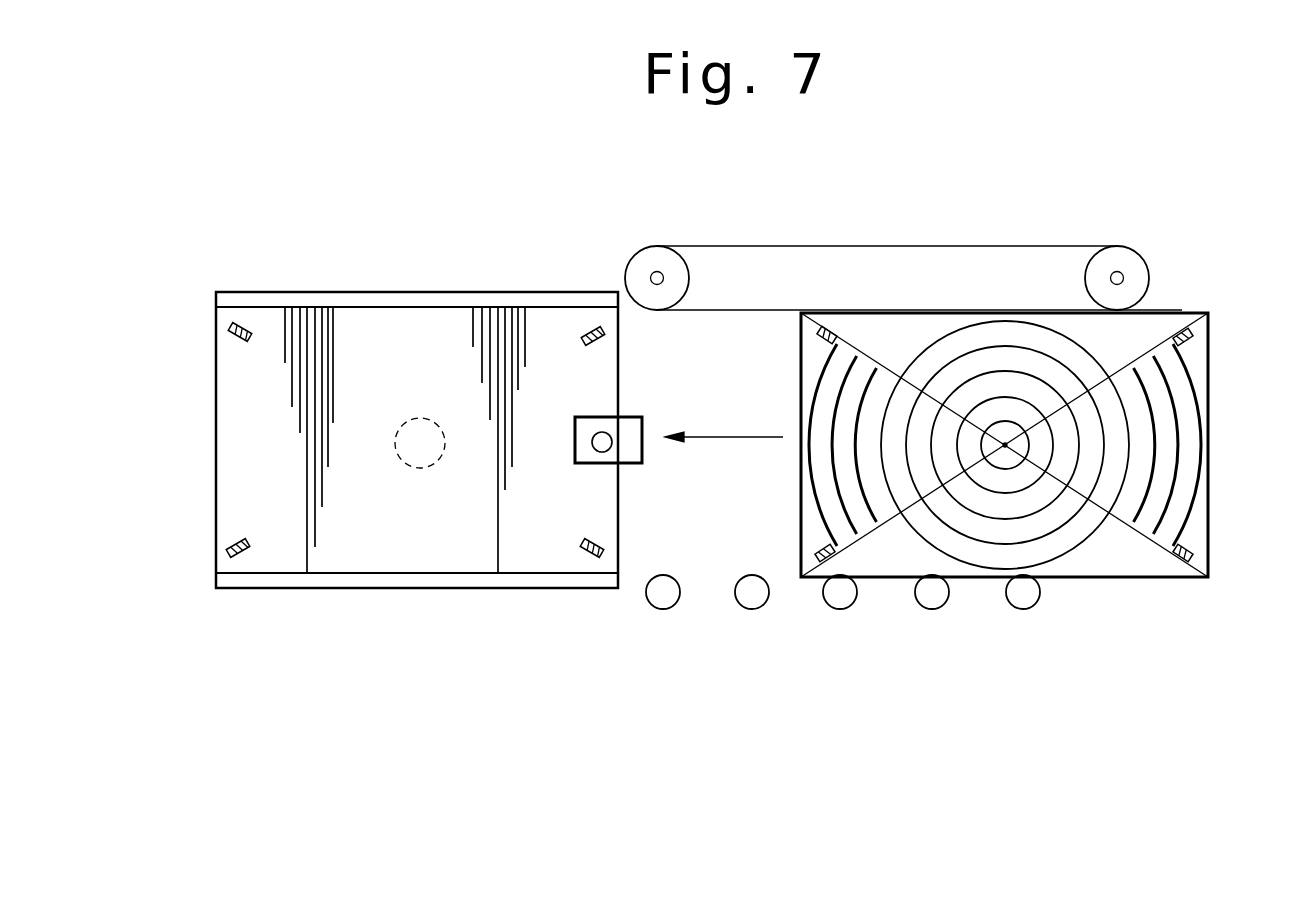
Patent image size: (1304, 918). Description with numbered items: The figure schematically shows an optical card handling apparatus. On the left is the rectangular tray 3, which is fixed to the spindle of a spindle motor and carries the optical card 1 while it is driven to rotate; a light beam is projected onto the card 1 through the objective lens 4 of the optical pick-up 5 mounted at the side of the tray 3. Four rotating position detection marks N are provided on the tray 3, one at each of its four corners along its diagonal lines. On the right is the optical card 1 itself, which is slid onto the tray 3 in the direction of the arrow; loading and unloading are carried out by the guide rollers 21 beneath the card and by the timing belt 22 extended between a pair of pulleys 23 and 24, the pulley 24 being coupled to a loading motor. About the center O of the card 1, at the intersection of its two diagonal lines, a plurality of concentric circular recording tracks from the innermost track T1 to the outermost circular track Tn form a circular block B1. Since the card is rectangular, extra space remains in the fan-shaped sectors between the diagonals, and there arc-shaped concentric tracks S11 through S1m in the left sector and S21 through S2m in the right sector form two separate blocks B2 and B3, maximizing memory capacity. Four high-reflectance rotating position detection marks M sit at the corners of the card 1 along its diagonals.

The optical card 1 is at (1177, 580).
The tray 3 is at (330, 535).
The objective lens 4 is at (612, 442).
The optical pick-up 5 is at (630, 460).
The guide rollers 21 is at (740, 605).
The timing belt 22 is at (797, 246).
The pulley 23 is at (660, 258).
The pulley 24 is at (1125, 258).
The rotating position detection marks N is at (235, 340).
The rotating position detection marks M is at (818, 345).
The disc center O is at (1005, 445).
The innermost recording track T1 is at (1004, 468).
The outermost circular recording track Tn is at (1078, 547).
The circular concentric block B1 is at (993, 333).
The arc-shaped concentric block B2 is at (890, 503).
The arc-shaped concentric block B3 is at (1168, 443).
The arc-shaped recording track S11 is at (853, 410).
The arc-shaped recording track S1m is at (813, 500).
The arc-shaped recording track S21 is at (1147, 387).
The arc-shaped recording track S2m is at (1190, 517).